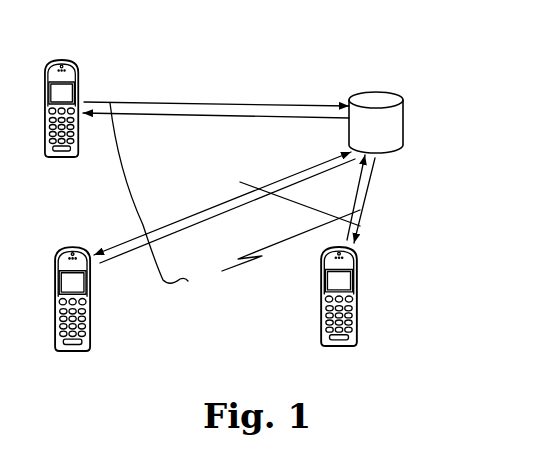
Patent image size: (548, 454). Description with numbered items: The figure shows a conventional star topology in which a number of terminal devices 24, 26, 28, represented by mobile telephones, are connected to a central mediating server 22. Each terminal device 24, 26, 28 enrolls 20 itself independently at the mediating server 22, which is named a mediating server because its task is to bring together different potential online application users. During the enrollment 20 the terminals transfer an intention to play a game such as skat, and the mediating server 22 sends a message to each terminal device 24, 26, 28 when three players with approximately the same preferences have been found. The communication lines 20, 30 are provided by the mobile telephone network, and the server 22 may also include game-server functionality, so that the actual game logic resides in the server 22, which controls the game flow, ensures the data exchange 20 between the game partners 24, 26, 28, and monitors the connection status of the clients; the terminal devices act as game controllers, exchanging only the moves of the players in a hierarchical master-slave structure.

The enrollment 20 is at (192, 117).
The mediating server 22 is at (407, 123).
The terminal device 24 is at (93, 278).
The terminal device 26 is at (92, 73).
The terminal device 28 is at (362, 290).
The communication lines 30 is at (168, 232).